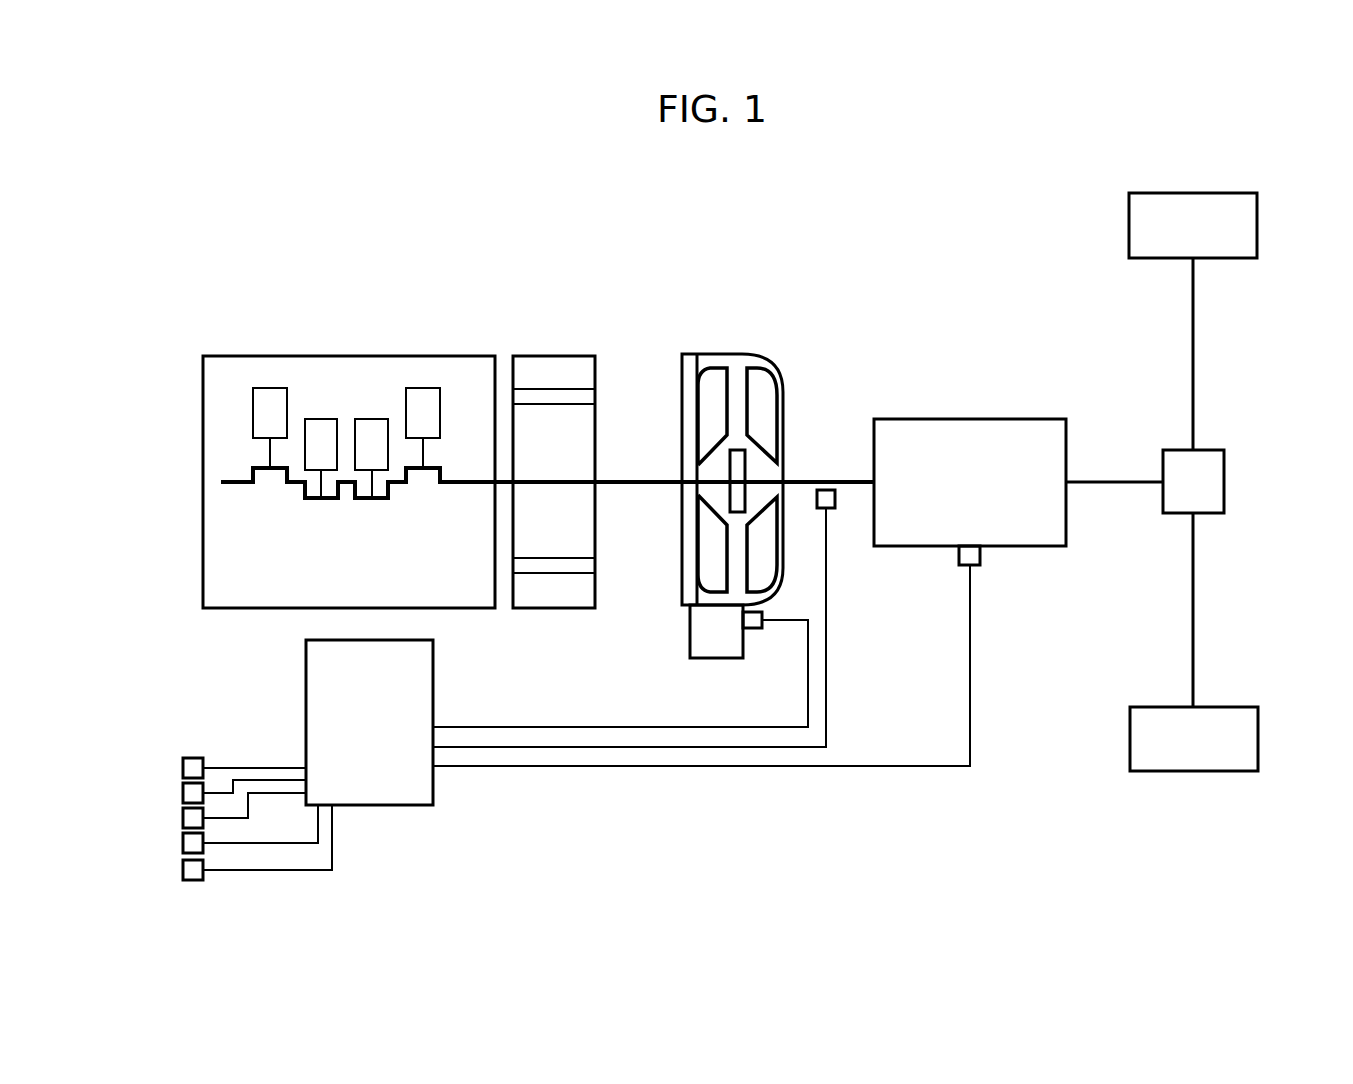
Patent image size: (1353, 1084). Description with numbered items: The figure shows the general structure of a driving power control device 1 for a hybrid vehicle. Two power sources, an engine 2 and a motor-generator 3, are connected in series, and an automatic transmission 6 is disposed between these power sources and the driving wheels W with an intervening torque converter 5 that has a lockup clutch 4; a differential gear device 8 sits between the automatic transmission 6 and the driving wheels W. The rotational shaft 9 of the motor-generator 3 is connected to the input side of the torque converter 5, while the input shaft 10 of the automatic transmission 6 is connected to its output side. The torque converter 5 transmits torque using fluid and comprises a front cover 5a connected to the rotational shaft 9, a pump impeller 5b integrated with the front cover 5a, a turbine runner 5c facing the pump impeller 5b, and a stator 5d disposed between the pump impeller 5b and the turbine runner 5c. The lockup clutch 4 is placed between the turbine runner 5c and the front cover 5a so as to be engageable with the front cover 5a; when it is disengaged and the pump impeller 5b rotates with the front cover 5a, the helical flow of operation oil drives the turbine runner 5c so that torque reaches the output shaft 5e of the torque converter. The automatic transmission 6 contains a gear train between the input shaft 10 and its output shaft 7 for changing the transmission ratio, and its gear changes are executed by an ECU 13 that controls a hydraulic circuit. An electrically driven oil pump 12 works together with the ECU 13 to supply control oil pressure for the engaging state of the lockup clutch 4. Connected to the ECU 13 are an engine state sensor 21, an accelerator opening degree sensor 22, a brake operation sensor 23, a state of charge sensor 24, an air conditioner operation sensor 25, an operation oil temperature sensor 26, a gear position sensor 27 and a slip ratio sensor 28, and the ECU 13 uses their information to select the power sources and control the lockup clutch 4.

The driving power control device 1 is at (377, 278).
The engine 2 is at (240, 355).
The motor-generator 3 is at (530, 355).
The lockup clutch 4 is at (697, 390).
The torque converter 5 is at (722, 340).
The front cover 5a is at (680, 372).
The pump impeller 5b is at (760, 387).
The turbine runner 5c is at (733, 387).
The stator 5d is at (742, 468).
The output shaft 5e is at (797, 487).
The automatic transmission 6 is at (969, 419).
The output shaft 7 is at (1113, 487).
The differential gear device 8 is at (1224, 482).
The rotational shaft 9 is at (615, 473).
The input shaft 10 is at (862, 477).
The oil pump 12 is at (690, 612).
The ECU 13 is at (306, 673).
The engine state sensor 21 is at (192, 755).
The accelerator opening degree sensor 22 is at (183, 792).
The brake operation sensor 23 is at (183, 867).
The state of charge sensor 24 is at (183, 817).
The air conditioner operation sensor 25 is at (183, 842).
The operation oil temperature sensor 26 is at (753, 628).
The gear position sensor 27 is at (980, 553).
The slip ratio sensor 28 is at (833, 510).
The driving wheels W is at (1257, 222).